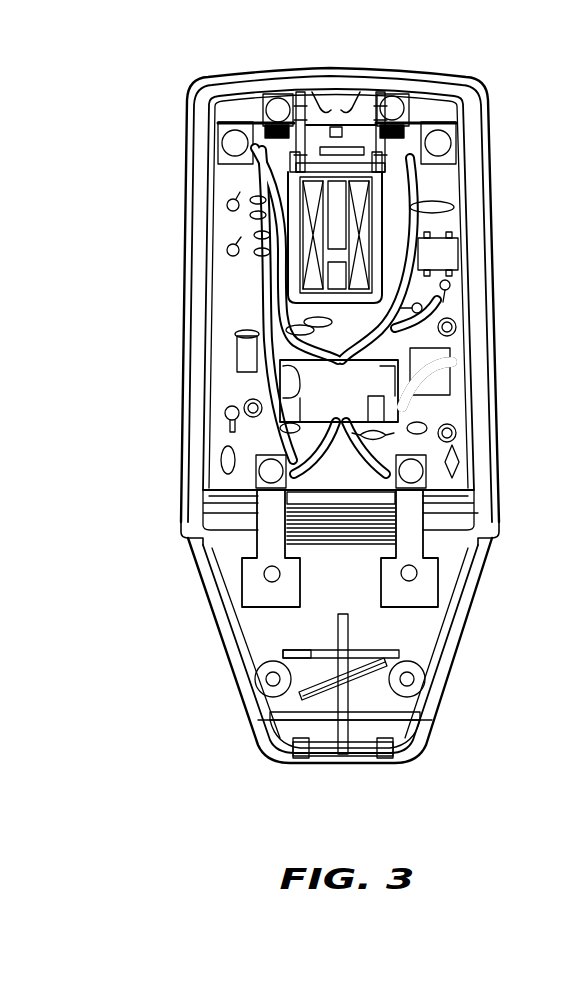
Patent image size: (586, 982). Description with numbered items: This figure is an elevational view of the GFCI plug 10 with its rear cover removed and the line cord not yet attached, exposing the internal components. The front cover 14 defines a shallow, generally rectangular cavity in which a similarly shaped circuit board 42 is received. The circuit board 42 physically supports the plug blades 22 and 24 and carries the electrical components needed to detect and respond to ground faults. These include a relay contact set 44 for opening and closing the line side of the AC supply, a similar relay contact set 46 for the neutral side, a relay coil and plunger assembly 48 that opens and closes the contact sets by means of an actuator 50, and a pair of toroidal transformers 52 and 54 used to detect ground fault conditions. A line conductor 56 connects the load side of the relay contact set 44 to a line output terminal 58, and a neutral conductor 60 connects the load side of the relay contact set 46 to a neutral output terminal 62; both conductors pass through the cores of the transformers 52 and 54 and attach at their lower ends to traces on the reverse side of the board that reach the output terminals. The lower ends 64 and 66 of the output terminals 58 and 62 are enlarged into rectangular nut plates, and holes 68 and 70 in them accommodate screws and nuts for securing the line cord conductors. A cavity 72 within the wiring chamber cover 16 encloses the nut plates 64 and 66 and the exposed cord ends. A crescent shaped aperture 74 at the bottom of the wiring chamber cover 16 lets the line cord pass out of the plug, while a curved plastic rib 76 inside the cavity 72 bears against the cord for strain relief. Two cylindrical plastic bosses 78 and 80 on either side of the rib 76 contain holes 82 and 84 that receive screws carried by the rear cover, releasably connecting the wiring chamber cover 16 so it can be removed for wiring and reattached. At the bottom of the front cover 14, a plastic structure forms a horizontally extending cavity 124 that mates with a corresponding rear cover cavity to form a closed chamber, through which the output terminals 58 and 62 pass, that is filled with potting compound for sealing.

The GFCI plug 10 is at (333, 415).
The front cover 14 is at (492, 305).
The wiring chamber cover 16 is at (482, 575).
The plug blade 22 is at (302, 95).
The plug blade 24 is at (368, 98).
The circuit board 42 is at (220, 440).
The relay contact set 44 is at (252, 110).
The relay contact set 46 is at (418, 106).
The relay coil and plunger assembly 48 is at (352, 308).
The actuator 50 is at (336, 95).
The toroidal transformer 52 is at (252, 380).
The toroidal transformer 54 is at (430, 408).
The line conductor 56 is at (272, 293).
The line output terminal 58 is at (272, 505).
The neutral conductor 60 is at (440, 225).
The neutral output terminal 62 is at (410, 508).
The lower end of line output terminal 64 is at (216, 559).
The lower end of neutral output terminal 66 is at (460, 559).
The hole 68 is at (265, 575).
The hole 70 is at (415, 572).
The cavity 72 is at (352, 640).
The crescent shaped aperture 74 is at (355, 756).
The curved plastic rib 76 is at (318, 668).
The cylindrical plastic boss 78 is at (268, 693).
The cylindrical plastic boss 80 is at (418, 698).
The hole 82 is at (272, 678).
The hole 84 is at (410, 678).
The cavity 124 is at (323, 528).